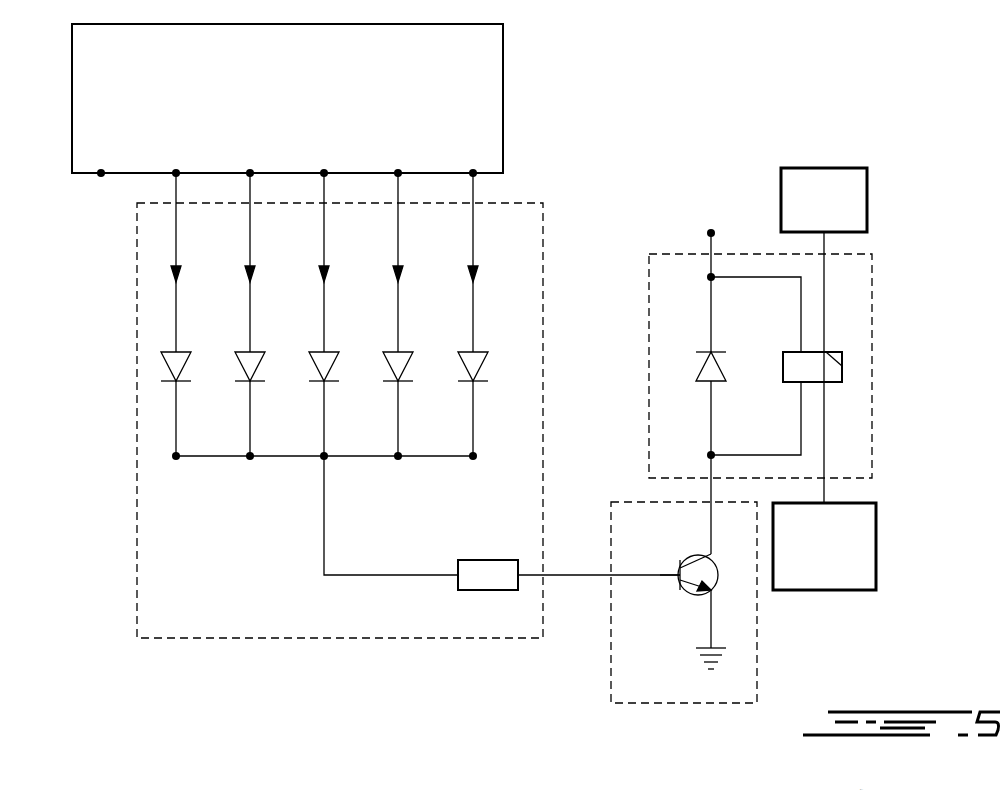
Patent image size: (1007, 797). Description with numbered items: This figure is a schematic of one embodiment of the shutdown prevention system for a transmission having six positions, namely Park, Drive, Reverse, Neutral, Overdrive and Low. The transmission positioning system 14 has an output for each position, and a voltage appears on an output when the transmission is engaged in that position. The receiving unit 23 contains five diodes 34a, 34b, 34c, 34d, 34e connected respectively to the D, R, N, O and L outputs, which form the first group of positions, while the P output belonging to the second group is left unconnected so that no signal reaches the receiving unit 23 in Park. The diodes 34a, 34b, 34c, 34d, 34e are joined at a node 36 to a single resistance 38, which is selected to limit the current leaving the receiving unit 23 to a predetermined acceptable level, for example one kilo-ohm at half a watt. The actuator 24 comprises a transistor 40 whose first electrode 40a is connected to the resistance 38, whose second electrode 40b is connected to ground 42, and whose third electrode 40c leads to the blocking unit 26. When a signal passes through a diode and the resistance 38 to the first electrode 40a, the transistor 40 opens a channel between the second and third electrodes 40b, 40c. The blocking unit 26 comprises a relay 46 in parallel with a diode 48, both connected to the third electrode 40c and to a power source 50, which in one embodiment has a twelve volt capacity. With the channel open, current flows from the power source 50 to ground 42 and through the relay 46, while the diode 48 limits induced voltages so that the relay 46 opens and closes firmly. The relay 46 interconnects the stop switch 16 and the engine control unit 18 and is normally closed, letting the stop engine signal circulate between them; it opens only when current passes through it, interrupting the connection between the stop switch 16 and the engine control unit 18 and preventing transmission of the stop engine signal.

The transmission positioning system 14 is at (503, 72).
The stop switch 16 is at (868, 190).
The engine control unit 18 is at (877, 545).
The receiving unit 23 is at (200, 640).
The actuator 24 is at (611, 670).
The blocking unit 26 is at (872, 293).
The diode 34a is at (181, 360).
The diode 34b is at (255, 360).
The diode 34c is at (329, 360).
The diode 34d is at (403, 360).
The diode 34e is at (478, 360).
The node 36 is at (324, 459).
The resistance 38 is at (488, 560).
The transistor 40 is at (691, 597).
The first electrode 40a is at (676, 586).
The second electrode 40b is at (713, 608).
The third electrode 40c is at (711, 533).
The ground 42 is at (718, 660).
The relay 46 is at (842, 365).
The diode 48 is at (717, 372).
The power source 50 is at (711, 229).